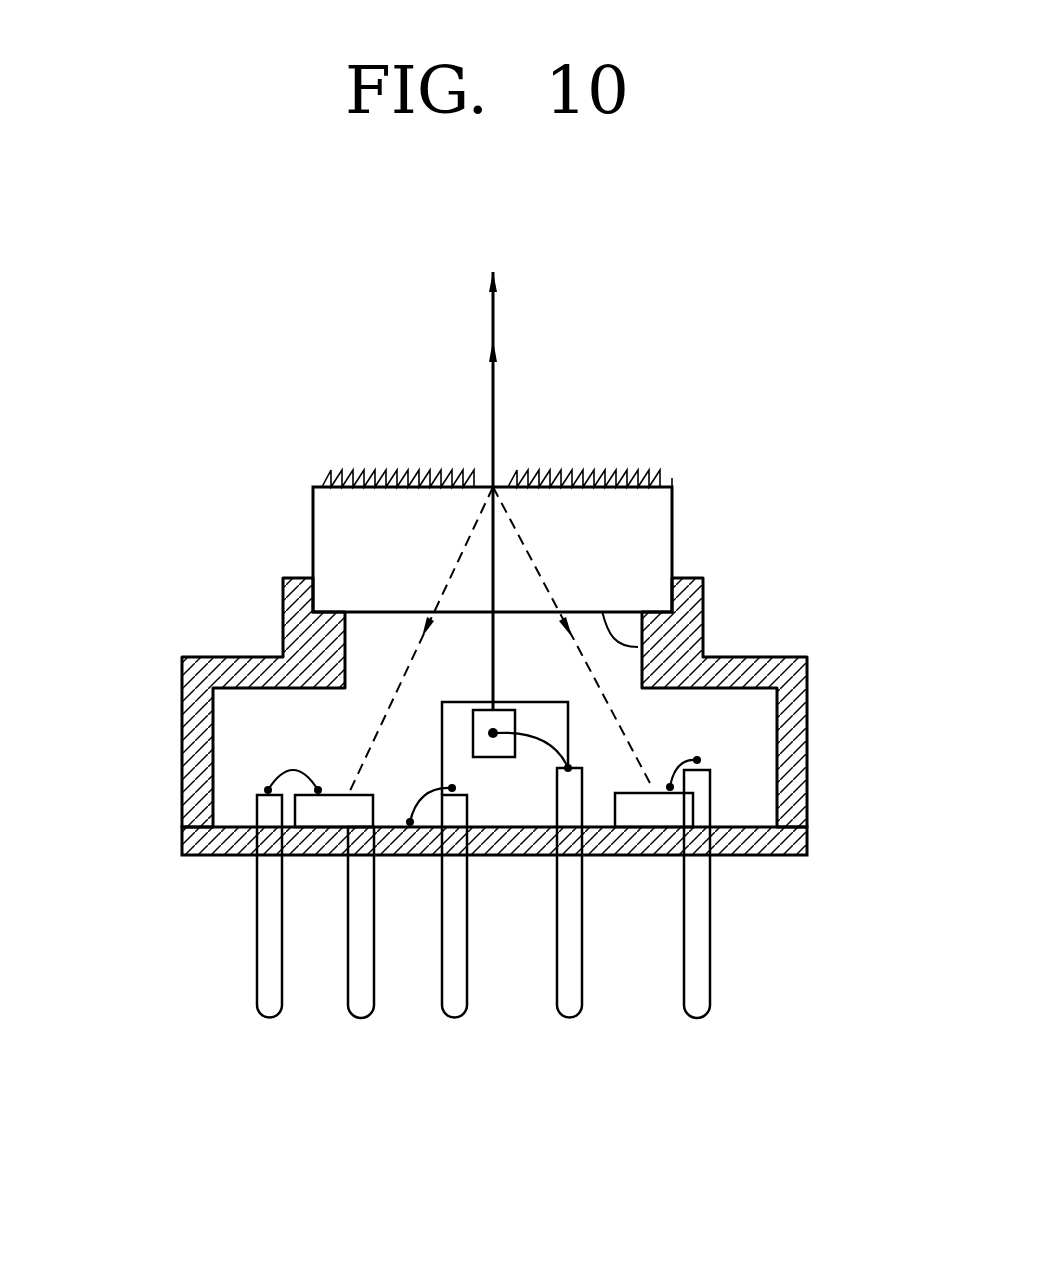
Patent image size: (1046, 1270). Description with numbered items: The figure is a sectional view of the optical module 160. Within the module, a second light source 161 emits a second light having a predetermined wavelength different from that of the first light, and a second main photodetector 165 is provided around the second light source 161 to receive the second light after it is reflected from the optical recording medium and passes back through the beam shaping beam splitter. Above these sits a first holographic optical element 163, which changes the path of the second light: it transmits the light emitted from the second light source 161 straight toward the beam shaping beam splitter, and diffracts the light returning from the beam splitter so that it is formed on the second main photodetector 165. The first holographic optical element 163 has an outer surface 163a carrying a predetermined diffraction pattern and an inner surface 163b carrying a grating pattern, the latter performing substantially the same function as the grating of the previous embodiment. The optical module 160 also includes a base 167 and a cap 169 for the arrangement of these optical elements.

The optical module 160 is at (180, 417).
The second light source 161 is at (493, 736).
The first holographic optical element 163 is at (658, 540).
The outer surface 163a is at (636, 472).
The inner surface 163b is at (702, 598).
The second main photodetector 165 is at (322, 818).
The base 167 is at (807, 845).
The cap 169 is at (807, 759).